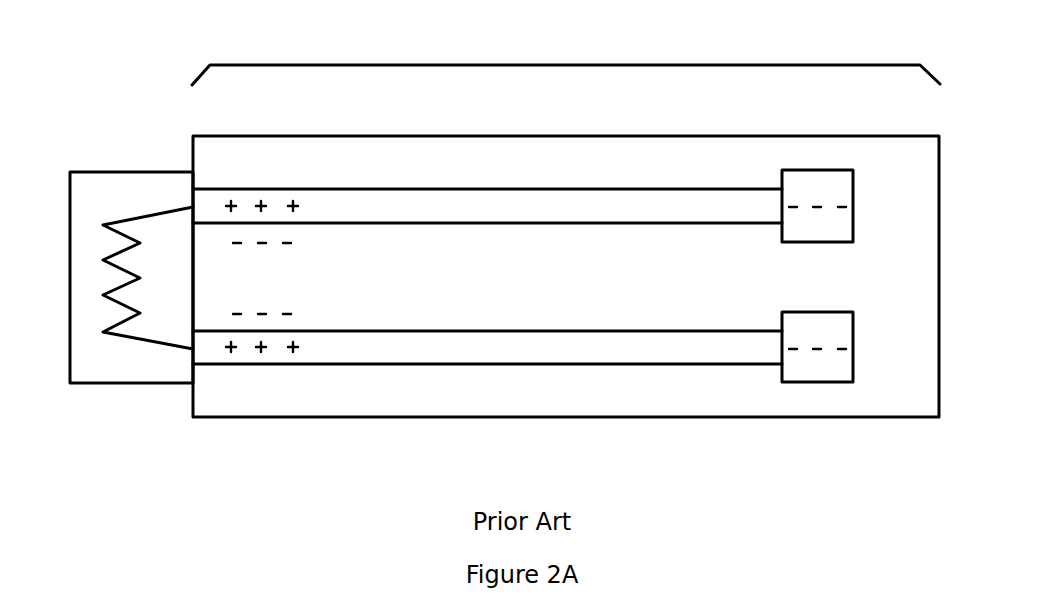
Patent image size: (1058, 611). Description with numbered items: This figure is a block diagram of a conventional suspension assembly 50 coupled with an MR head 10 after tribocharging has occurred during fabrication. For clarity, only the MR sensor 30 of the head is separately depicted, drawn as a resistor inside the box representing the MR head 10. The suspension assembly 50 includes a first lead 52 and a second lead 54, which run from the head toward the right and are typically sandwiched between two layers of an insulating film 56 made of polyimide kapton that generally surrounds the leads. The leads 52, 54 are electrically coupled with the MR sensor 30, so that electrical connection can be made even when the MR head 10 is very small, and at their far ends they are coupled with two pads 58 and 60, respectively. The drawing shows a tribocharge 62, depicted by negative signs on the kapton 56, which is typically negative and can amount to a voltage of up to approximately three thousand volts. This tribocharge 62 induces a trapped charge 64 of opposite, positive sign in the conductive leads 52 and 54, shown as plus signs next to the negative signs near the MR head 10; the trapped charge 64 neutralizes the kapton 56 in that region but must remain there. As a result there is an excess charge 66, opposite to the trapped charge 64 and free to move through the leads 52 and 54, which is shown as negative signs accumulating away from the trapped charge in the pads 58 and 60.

The MR head 10 is at (87, 170).
The MR sensor 30 is at (103, 333).
The suspension assembly 50 is at (566, 65).
The first lead 52 is at (575, 188).
The second lead 54 is at (575, 365).
The insulating film 56 is at (470, 137).
The pad 58 is at (833, 170).
The pad 60 is at (833, 382).
The tribocharge 62 is at (296, 243).
The trapped charge 64 is at (232, 200).
The excess charge 66 is at (817, 205).